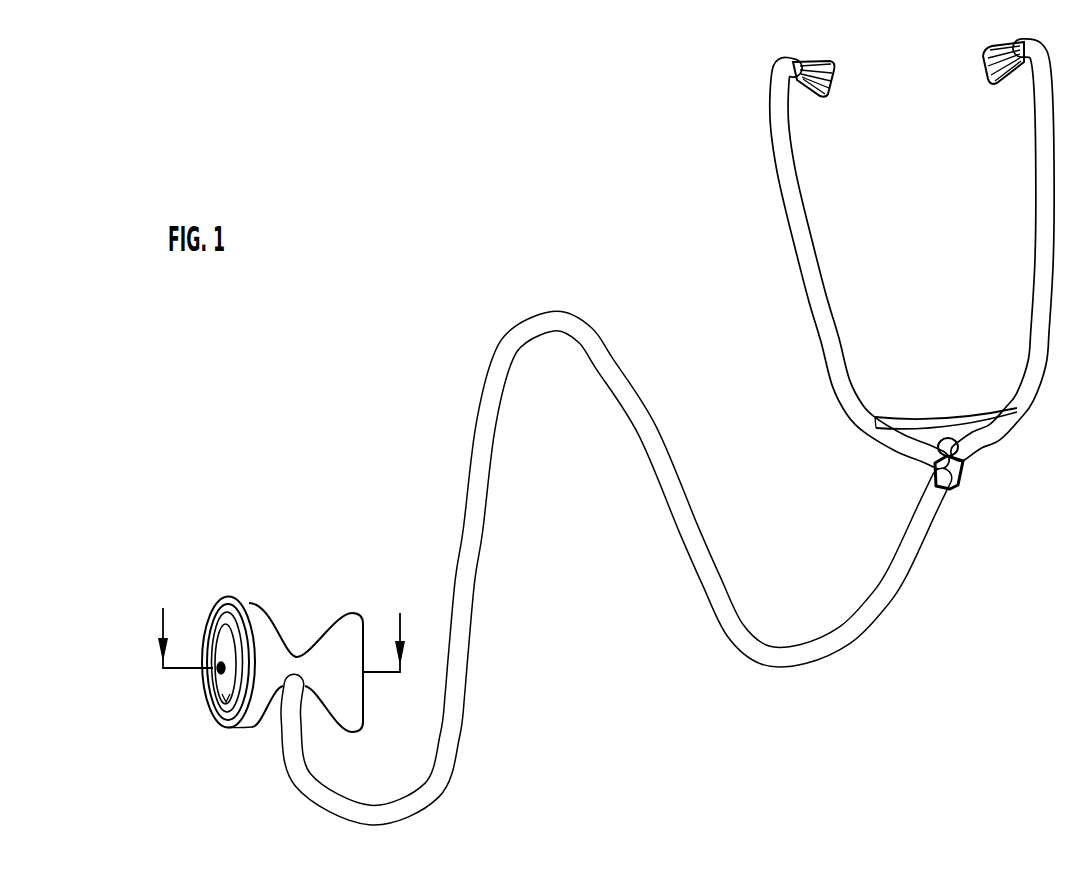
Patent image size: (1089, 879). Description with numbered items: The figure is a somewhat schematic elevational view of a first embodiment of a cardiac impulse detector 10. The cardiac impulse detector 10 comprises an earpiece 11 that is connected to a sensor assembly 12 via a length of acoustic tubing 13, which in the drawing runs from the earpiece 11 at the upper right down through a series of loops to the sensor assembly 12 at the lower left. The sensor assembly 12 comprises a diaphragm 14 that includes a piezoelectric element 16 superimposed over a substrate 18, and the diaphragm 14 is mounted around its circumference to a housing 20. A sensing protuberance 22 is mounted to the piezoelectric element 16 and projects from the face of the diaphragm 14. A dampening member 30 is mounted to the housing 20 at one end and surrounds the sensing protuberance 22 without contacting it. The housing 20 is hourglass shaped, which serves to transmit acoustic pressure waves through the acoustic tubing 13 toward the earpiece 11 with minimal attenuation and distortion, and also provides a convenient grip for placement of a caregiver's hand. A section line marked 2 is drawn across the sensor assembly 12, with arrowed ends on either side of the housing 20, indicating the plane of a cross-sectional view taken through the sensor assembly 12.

The section line 2- 2 is at (282, 624).
The cardiac impulse detector 10 is at (520, 274).
The earpiece 11 is at (770, 69).
The sensor assembly 12 is at (307, 592).
The acoustic tubing 13 is at (461, 706).
The diaphragm 14 is at (212, 620).
The piezoelectric element 16 is at (217, 707).
The substrate 18 is at (253, 615).
The housing 20 is at (242, 727).
The sensing protuberance 22 is at (214, 660).
The dampening member 30 is at (213, 677).